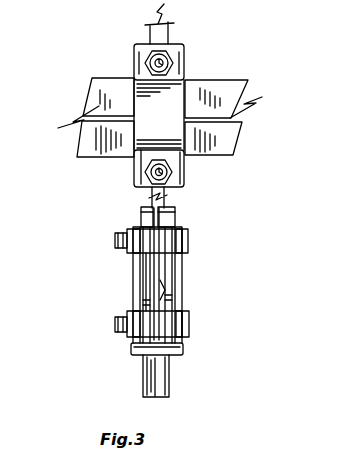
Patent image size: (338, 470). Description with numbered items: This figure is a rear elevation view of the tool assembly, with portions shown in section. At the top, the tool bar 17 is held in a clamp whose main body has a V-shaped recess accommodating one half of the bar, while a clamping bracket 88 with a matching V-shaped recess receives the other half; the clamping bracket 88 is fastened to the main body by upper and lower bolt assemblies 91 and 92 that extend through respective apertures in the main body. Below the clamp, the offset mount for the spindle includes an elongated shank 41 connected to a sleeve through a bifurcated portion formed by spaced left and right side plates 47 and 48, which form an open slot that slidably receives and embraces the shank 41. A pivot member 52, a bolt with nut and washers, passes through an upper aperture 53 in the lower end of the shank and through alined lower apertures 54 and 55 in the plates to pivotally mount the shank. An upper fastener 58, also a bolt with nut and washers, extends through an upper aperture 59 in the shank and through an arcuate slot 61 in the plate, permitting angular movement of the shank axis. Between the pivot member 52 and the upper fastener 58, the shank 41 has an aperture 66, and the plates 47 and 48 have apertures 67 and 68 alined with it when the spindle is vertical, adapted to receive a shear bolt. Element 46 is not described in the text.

The tool bar 17 is at (232, 96).
The shank 41 is at (170, 210).
The upper sleeve 46 is at (178, 213).
The left side plate 47 is at (136, 280).
The right side plate 48 is at (170, 268).
The pivot member 52 is at (188, 325).
The upper aperture 53 is at (146, 358).
The lower aperture 54 is at (138, 347).
The lower aperture 55 is at (180, 347).
The upper fastener 58 is at (200, 240).
The upper aperture 59 is at (144, 213).
The arcuate slot 61 is at (140, 270).
The aperture 66 is at (170, 300).
The aperture 67 is at (136, 302).
The aperture 68 is at (172, 288).
The clamping bracket 88 is at (168, 102).
The upper bolt assembly 91 is at (166, 56).
The lower bolt assembly 92 is at (178, 180).